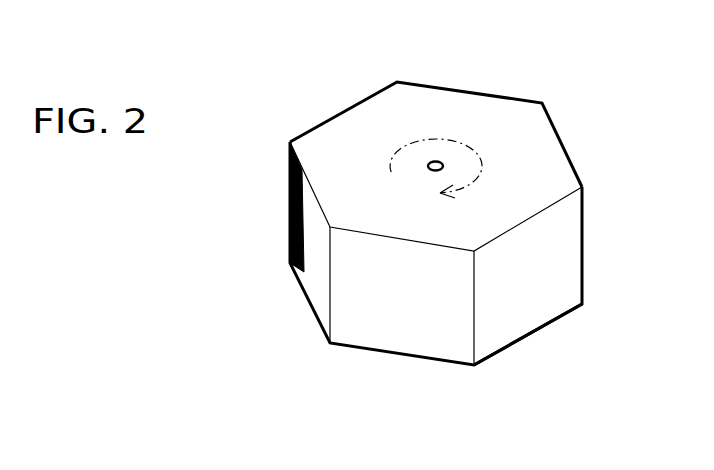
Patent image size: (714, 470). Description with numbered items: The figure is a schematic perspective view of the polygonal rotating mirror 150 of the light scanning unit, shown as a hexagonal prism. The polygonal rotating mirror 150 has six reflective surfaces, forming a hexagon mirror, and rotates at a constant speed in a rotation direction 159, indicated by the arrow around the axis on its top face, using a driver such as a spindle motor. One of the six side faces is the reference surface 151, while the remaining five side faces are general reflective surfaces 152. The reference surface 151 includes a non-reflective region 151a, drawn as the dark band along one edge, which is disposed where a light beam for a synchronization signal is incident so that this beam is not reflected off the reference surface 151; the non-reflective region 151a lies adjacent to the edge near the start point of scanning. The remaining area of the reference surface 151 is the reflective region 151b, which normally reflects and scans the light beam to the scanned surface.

The polygonal rotating mirror 150 is at (578, 121).
The reference surface 151 is at (221, 244).
The non-reflective region 151a is at (292, 263).
The reflective region 151b is at (322, 297).
The general reflective surfaces 152 is at (518, 313).
The rotation direction 159 is at (460, 140).